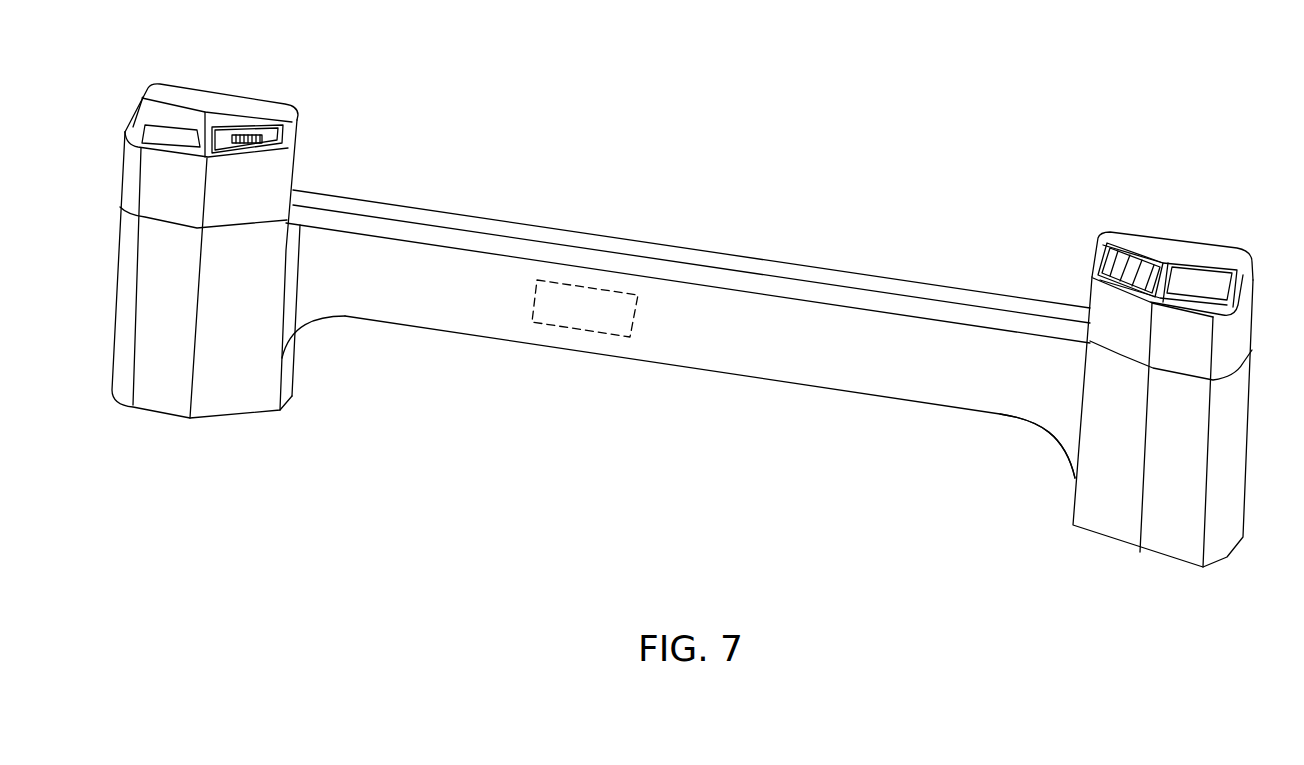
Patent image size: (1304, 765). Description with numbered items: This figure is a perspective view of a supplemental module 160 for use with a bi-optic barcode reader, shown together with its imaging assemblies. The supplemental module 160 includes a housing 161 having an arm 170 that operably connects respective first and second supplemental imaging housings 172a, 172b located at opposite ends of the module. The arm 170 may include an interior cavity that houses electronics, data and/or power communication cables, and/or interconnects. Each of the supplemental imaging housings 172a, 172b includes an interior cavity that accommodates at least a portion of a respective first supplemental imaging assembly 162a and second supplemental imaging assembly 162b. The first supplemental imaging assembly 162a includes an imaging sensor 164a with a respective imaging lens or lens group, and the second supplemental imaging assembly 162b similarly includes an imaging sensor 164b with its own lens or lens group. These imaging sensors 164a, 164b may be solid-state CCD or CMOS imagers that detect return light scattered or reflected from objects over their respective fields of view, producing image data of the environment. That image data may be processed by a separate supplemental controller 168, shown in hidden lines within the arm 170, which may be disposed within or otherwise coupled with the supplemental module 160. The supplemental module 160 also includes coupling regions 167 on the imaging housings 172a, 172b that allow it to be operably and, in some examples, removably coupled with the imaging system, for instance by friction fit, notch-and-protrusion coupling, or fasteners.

The supplemental module 160 is at (688, 334).
The housing 161 is at (537, 233).
The first supplemental imaging assembly 162a is at (1118, 270).
The second supplemental imaging assembly 162b is at (272, 162).
The imaging sensor 164a is at (1100, 262).
The imaging sensor 164b is at (240, 138).
The coupling region 167 is at (225, 392).
The supplemental controller 168 is at (587, 317).
The arm 170 is at (675, 345).
The first supplemental imaging housing 172a is at (1140, 255).
The second supplemental imaging housing 172b is at (236, 106).